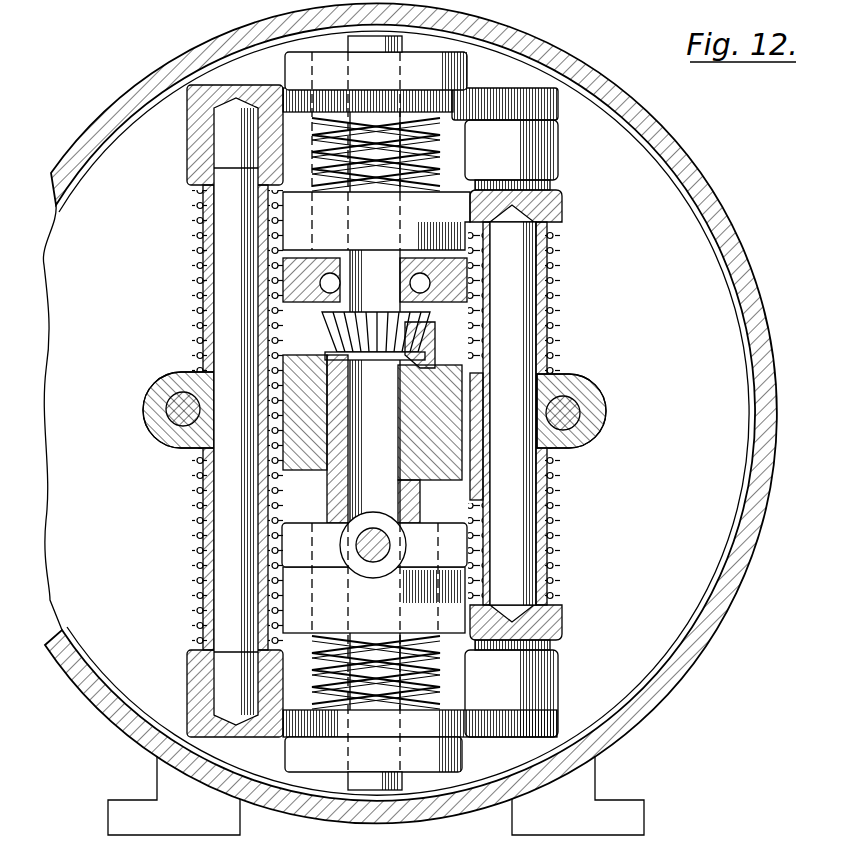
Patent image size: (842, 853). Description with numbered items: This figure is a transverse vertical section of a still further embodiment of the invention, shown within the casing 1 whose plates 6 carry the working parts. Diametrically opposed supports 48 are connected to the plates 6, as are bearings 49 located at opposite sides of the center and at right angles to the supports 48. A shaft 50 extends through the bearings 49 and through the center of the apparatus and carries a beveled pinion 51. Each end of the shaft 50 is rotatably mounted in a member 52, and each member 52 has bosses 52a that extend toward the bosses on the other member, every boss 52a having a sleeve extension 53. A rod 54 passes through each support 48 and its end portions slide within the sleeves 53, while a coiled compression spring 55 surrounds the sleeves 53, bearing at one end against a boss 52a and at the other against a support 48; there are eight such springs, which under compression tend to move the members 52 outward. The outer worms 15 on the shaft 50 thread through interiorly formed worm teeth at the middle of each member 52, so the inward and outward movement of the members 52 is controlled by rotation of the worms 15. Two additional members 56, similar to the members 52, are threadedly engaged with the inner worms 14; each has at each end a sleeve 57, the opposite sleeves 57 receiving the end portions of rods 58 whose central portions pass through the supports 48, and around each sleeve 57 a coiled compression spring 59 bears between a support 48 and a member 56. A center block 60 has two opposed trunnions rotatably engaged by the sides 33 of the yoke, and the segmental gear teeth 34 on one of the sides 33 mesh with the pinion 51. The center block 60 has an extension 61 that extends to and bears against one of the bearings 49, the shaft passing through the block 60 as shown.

The casing 1 is at (750, 298).
The plates 6 is at (723, 397).
The worms 14 is at (343, 180).
The worms 15 is at (378, 130).
The sides of yoke 33 is at (430, 378).
The segmental beveled gear teeth 34 is at (432, 330).
The supports 48 is at (578, 393).
The bearings 49 is at (457, 278).
The shaft 50 is at (370, 265).
The beveled pinion 51 is at (330, 322).
The members 52 is at (470, 108).
The bosses 52a is at (548, 153).
The sleeve extension 53 is at (548, 184).
The rod 54 is at (387, 411).
The coiled compression spring 55 is at (197, 302).
The additional members 56 is at (445, 210).
The sleeve 57 is at (555, 246).
The rods 58 is at (530, 440).
The coiled compression spring 59 is at (553, 320).
The center block 60 is at (345, 398).
The extension 61 is at (408, 522).